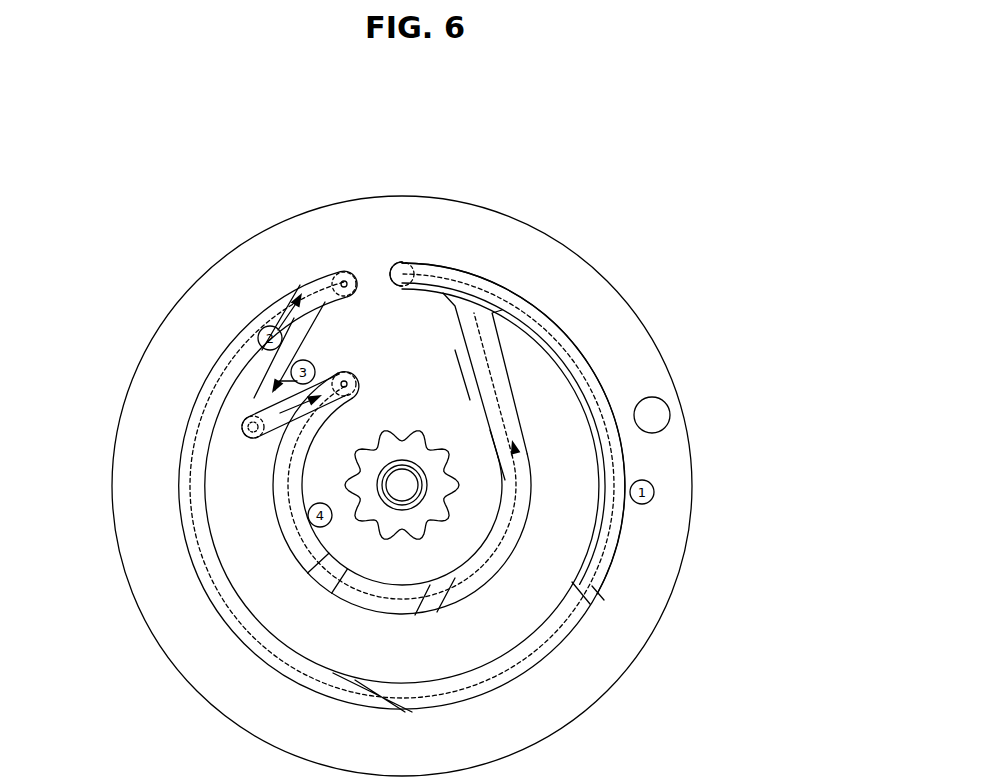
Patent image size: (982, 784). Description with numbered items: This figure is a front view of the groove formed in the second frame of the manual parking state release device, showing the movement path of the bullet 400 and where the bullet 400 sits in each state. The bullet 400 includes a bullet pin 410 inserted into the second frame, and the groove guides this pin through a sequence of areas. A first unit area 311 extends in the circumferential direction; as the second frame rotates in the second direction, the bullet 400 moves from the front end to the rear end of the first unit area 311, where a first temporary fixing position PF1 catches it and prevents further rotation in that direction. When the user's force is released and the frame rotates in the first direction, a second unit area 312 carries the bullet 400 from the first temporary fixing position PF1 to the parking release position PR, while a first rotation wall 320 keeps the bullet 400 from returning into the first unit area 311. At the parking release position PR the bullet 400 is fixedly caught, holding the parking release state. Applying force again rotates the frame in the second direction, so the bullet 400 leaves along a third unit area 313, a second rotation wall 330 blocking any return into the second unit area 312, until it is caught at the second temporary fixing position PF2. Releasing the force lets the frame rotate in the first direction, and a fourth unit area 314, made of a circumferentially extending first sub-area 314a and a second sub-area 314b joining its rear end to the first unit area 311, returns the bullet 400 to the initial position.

The first unit area 311 is at (570, 351).
The second unit area 312 is at (306, 329).
The third unit area 313 is at (272, 423).
The fourth unit area 314 is at (788, 475).
The 4-1 unit area 314a is at (510, 543).
The 4-2 unit area 314b is at (503, 402).
The first rotation wall 320 is at (303, 288).
The second rotation wall 330 is at (267, 397).
The bullet pin 410 is at (403, 262).
The bullet 400 is at (513, 428).
The first temporary fixing position PF1 is at (340, 273).
The second temporary fixing position PF2 is at (353, 400).
The parking release position PR is at (253, 423).